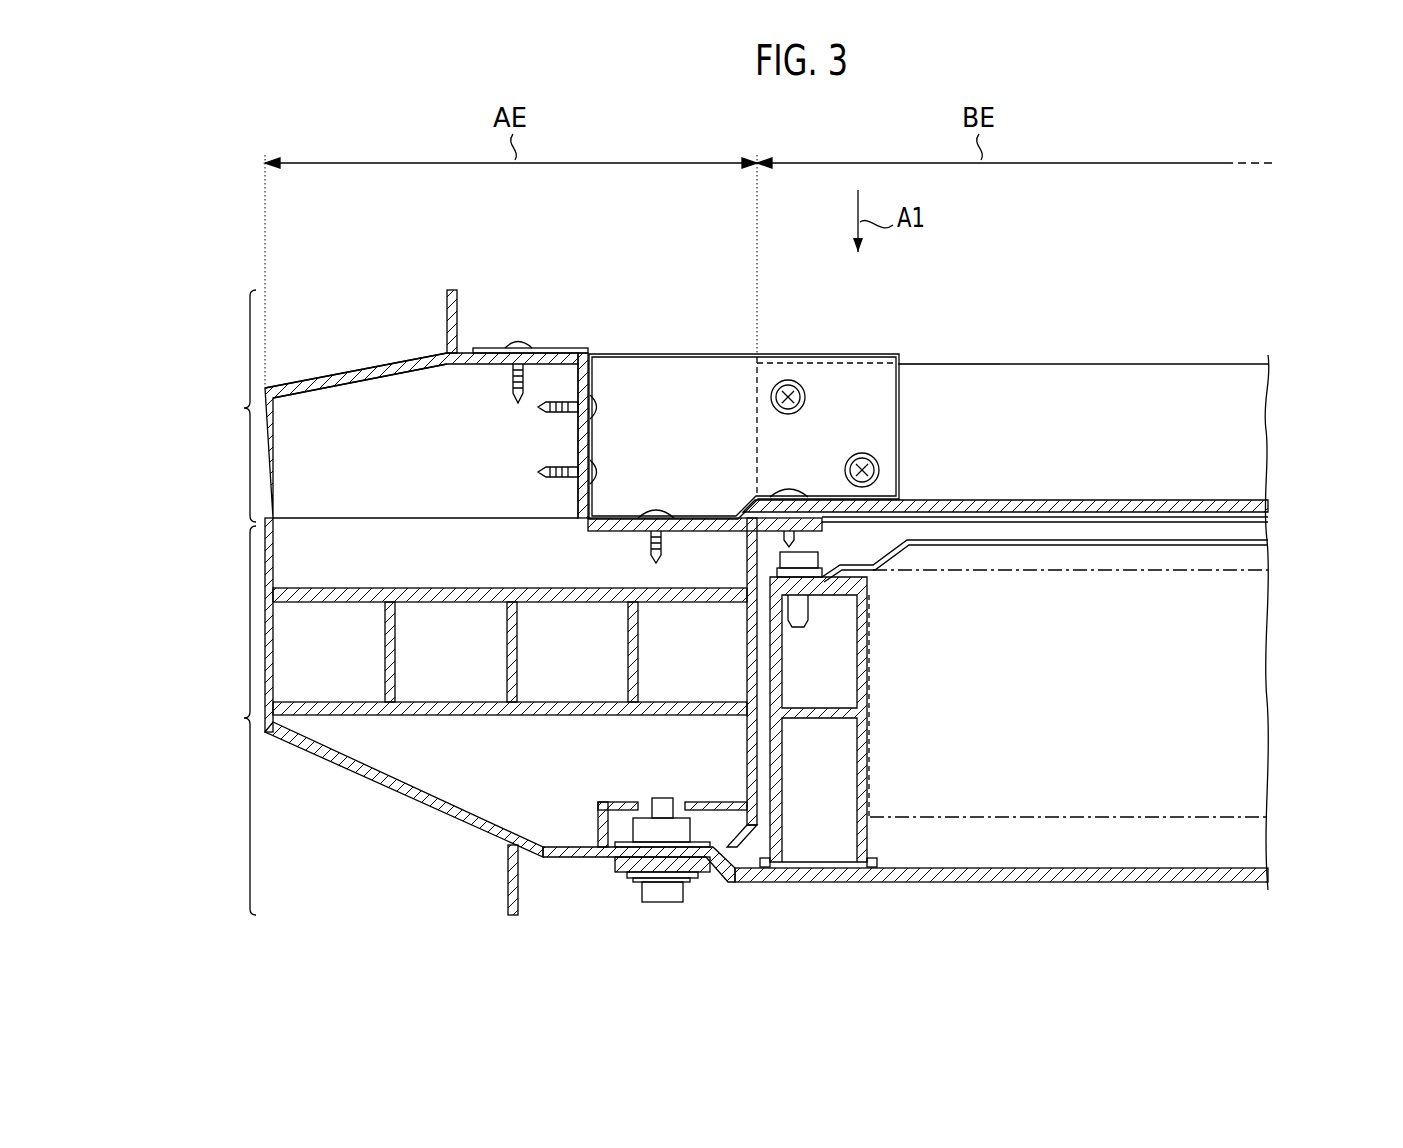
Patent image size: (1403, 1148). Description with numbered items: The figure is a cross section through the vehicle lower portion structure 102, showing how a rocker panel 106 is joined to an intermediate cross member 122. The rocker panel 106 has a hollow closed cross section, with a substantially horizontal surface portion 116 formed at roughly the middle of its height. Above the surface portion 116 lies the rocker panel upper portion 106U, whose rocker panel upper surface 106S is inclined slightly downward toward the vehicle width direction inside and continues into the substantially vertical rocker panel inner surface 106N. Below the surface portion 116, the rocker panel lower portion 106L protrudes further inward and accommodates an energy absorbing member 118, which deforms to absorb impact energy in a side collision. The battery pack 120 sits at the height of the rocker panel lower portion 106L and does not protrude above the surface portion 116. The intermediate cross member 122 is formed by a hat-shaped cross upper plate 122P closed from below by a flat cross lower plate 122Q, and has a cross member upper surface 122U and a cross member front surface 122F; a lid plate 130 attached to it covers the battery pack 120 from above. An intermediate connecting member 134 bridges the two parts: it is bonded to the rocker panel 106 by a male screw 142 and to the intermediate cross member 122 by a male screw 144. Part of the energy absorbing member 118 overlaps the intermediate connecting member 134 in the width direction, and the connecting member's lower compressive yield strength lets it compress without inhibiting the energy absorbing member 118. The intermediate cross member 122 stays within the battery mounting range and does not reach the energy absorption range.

The vehicle lower portion structure 102 is at (224, 313).
The rocker panel 106 is at (565, 858).
The rocker panel upper portion 106U is at (376, 435).
The rocker panel lower portion 106L is at (461, 716).
The rocker panel upper surface 106S is at (466, 348).
The rocker panel inner surface 106N is at (590, 446).
The surface portion 116 is at (716, 516).
The energy absorbing member 118 is at (490, 716).
The battery pack 120 is at (912, 884).
The intermediate cross member 122 is at (1018, 361).
The cross member upper surface 122U is at (1100, 362).
The cross member front surface 122F is at (1184, 398).
The cross upper plate 122P is at (1252, 438).
The cross lower plate 122Q is at (1265, 519).
The lid plate 130 is at (1262, 506).
The intermediate connecting member 134 is at (680, 345).
The male screw 142 is at (602, 407).
The male screw 144 is at (789, 482).